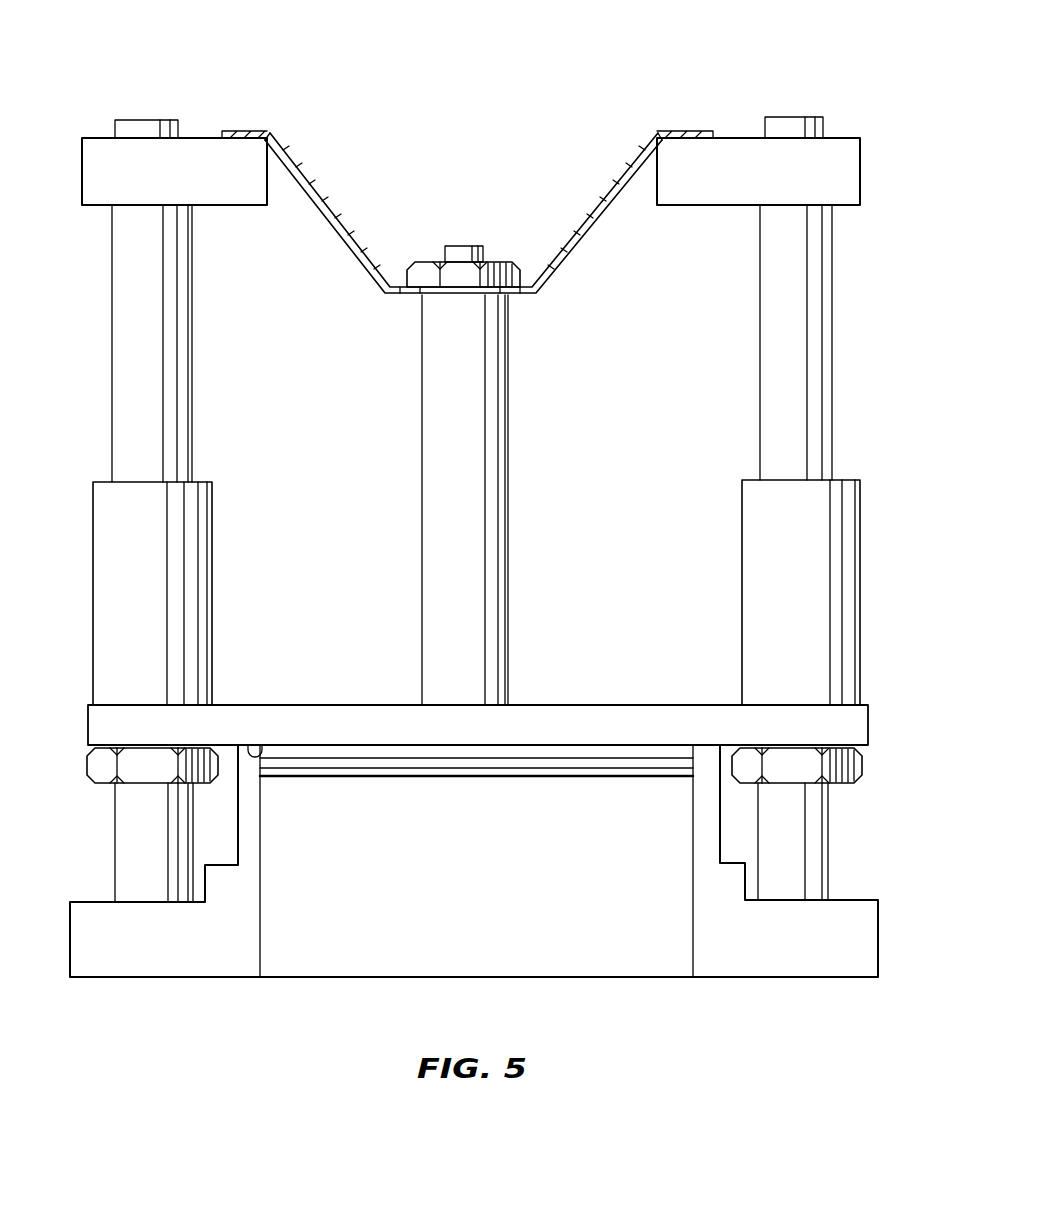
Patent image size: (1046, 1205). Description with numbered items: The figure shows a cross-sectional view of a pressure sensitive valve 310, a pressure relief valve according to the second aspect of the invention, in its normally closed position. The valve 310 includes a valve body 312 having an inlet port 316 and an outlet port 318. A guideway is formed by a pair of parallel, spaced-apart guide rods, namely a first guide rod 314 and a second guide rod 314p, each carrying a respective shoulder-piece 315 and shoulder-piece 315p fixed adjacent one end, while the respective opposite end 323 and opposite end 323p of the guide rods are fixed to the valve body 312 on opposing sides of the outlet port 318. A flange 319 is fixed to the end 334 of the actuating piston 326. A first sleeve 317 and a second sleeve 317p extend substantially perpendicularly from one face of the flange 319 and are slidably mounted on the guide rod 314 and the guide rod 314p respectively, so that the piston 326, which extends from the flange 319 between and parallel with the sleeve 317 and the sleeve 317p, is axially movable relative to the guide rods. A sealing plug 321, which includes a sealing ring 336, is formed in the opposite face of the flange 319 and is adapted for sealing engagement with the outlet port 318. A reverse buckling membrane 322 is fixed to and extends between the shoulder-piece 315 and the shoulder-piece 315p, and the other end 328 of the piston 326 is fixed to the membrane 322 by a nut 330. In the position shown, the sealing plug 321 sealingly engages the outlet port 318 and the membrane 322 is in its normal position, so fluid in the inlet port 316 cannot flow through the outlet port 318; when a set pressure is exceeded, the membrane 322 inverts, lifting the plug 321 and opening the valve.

The pressure sensitive valve 310 is at (703, 88).
The valve body 312 is at (760, 945).
The guide rod 314 is at (160, 348).
The guide rod 314p is at (775, 302).
The shoulder-piece 315 is at (200, 163).
The shoulder-piece 315p is at (705, 170).
The inlet port 316 is at (512, 964).
The sleeve 317 is at (180, 595).
The sleeve 317p is at (770, 625).
The outlet port 318 is at (255, 745).
The flange 319 is at (322, 725).
The sealing plug 321 is at (428, 772).
The reverse buckling membrane 322 is at (338, 213).
The opposite end of guide rod 323 is at (140, 900).
The opposite end of guide rod 323p is at (795, 890).
The piston 326 is at (475, 490).
The end of piston 328 is at (455, 310).
The nut 330 is at (468, 270).
The end of piston 334 is at (465, 700).
The sealing ring 336 is at (635, 765).